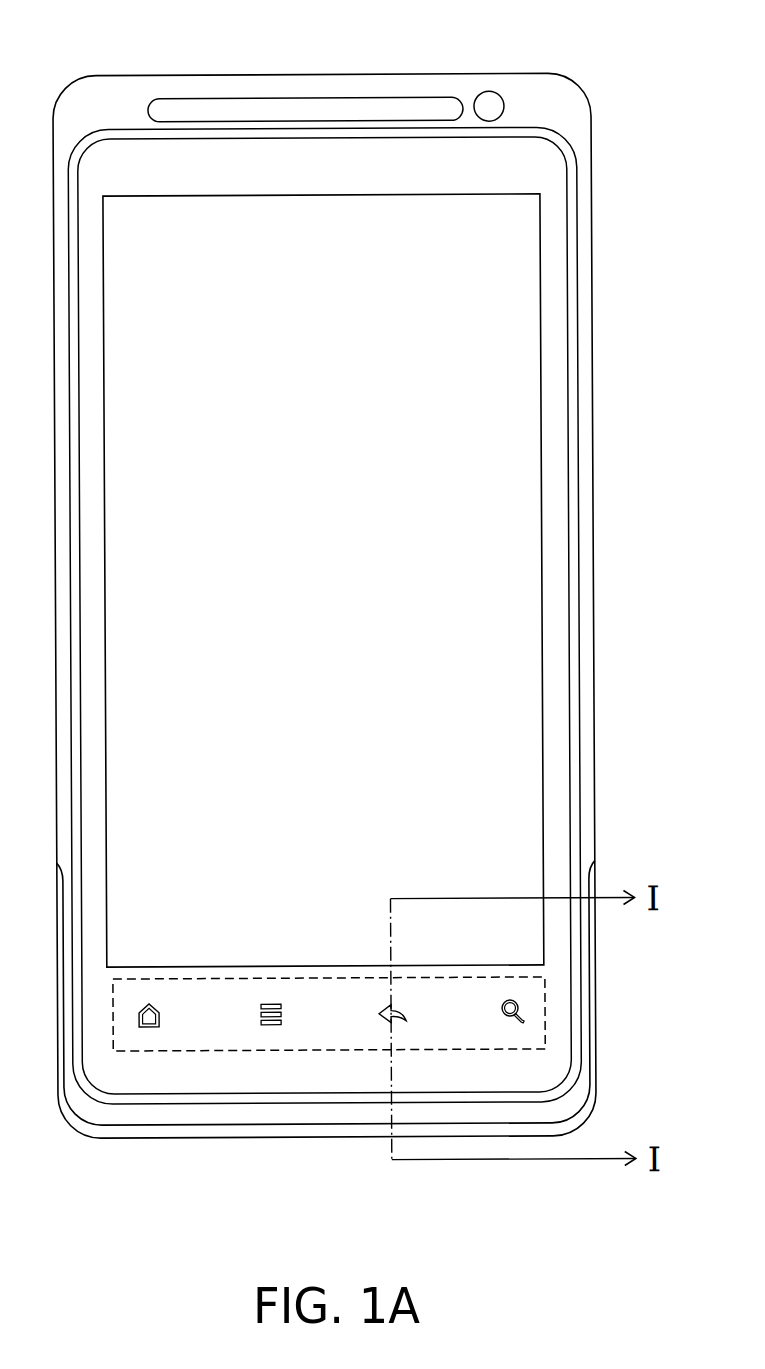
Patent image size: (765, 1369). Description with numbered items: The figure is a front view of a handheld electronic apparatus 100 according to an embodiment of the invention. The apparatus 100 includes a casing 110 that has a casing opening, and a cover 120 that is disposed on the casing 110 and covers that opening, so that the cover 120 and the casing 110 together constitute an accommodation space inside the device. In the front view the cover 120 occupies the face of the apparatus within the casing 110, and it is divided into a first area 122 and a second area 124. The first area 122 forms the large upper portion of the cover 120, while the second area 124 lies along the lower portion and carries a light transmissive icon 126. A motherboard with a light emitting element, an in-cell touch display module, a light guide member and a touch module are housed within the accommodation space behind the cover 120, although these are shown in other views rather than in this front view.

The handheld electronic apparatus 100 is at (361, 599).
The casing 110 is at (586, 748).
The cover 120 is at (391, 1085).
The first area 122 is at (518, 652).
The second area 124 is at (232, 1037).
The light transmissive icon 126 is at (143, 1027).